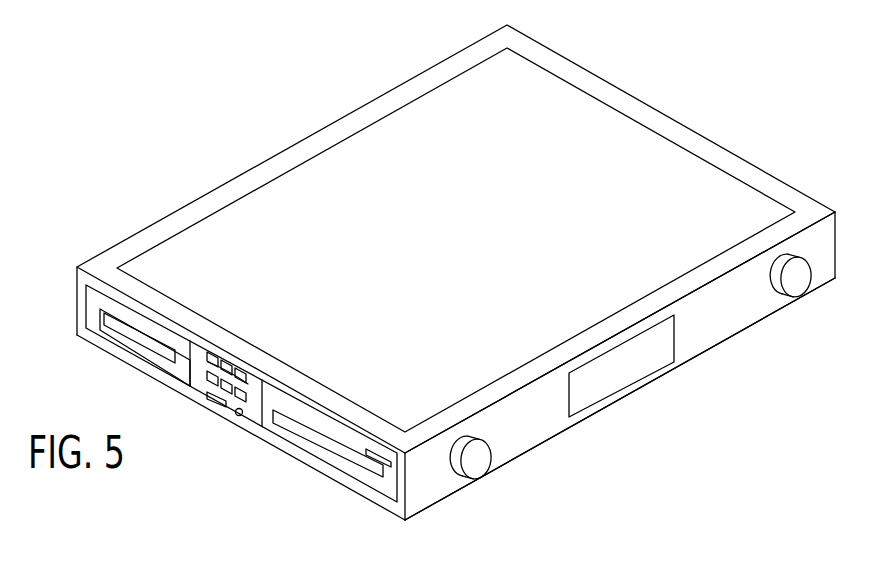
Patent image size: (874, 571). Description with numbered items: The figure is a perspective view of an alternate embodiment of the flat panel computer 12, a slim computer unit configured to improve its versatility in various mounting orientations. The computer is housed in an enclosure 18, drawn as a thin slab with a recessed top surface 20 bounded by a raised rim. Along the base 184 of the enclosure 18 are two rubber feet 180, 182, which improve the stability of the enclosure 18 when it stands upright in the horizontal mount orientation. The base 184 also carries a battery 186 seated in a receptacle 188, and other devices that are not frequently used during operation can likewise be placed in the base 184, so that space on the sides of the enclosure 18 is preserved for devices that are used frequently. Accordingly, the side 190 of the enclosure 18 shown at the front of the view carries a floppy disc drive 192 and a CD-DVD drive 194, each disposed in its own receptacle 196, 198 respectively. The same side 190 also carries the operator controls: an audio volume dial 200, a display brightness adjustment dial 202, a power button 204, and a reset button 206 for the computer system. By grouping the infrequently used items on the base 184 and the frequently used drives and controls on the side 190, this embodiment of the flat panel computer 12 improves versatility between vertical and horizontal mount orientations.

The flat panel computer 12 is at (847, 214).
The enclosure 18 is at (585, 68).
The recessed top surface 20 is at (715, 177).
The rubber foot 180 is at (499, 467).
The rubber foot 182 is at (814, 290).
The base 184 is at (530, 437).
The battery 186 is at (624, 388).
The receptacle 188 is at (675, 343).
The side 190 is at (412, 512).
The floppy disc drive 192 is at (138, 346).
The CD-DVD drive 194 is at (312, 442).
The receptacle 196 is at (88, 338).
The receptacle 198 is at (373, 498).
The audio volume dial 200 is at (232, 362).
The display brightness adjustment dial 202 is at (207, 372).
The power button 204 is at (212, 411).
The reset button 206 is at (242, 418).